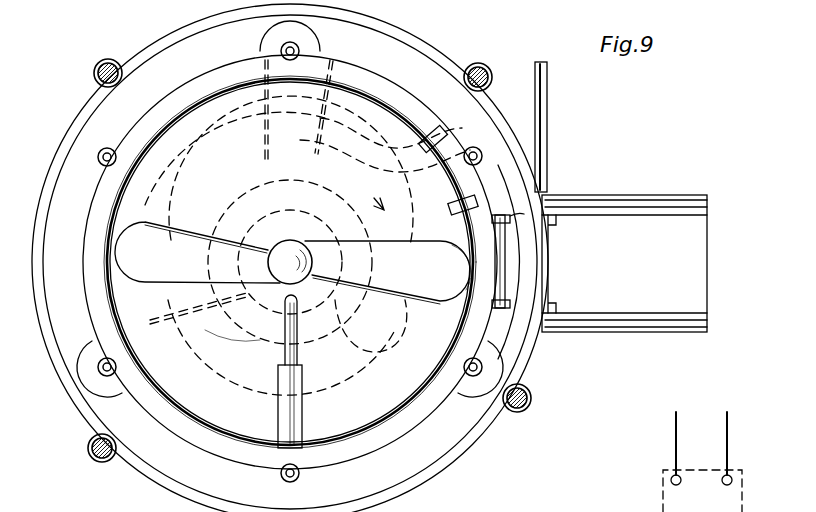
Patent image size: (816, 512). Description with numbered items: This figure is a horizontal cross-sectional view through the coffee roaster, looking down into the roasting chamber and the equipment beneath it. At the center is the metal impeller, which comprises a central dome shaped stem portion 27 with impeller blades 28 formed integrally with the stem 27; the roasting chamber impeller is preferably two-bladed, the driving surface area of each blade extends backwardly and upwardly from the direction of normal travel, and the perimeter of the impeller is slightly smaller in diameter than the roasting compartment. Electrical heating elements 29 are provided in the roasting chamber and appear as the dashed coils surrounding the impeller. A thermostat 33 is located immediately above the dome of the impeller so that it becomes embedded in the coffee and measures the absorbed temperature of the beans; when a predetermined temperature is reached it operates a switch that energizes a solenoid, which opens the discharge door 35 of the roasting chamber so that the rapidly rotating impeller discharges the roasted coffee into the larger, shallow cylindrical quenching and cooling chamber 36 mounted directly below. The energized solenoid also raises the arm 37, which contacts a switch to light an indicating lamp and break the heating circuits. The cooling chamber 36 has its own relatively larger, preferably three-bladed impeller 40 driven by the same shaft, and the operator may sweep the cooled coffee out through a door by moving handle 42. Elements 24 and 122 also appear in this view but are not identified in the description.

The housing 24 is at (388, 438).
The quenching and cooling chamber 36 is at (452, 430).
The impeller 40 is at (318, 47).
The handle 42 is at (547, 100).
The arm 37 is at (520, 228).
The impeller blades 28 is at (198, 228).
The dome shaped stem portion 27 is at (292, 240).
The discharge door 35 is at (416, 296).
The electrical heating elements 29 is at (246, 318).
The thermostat 33 is at (298, 400).
The connector bracket 122 is at (745, 477).